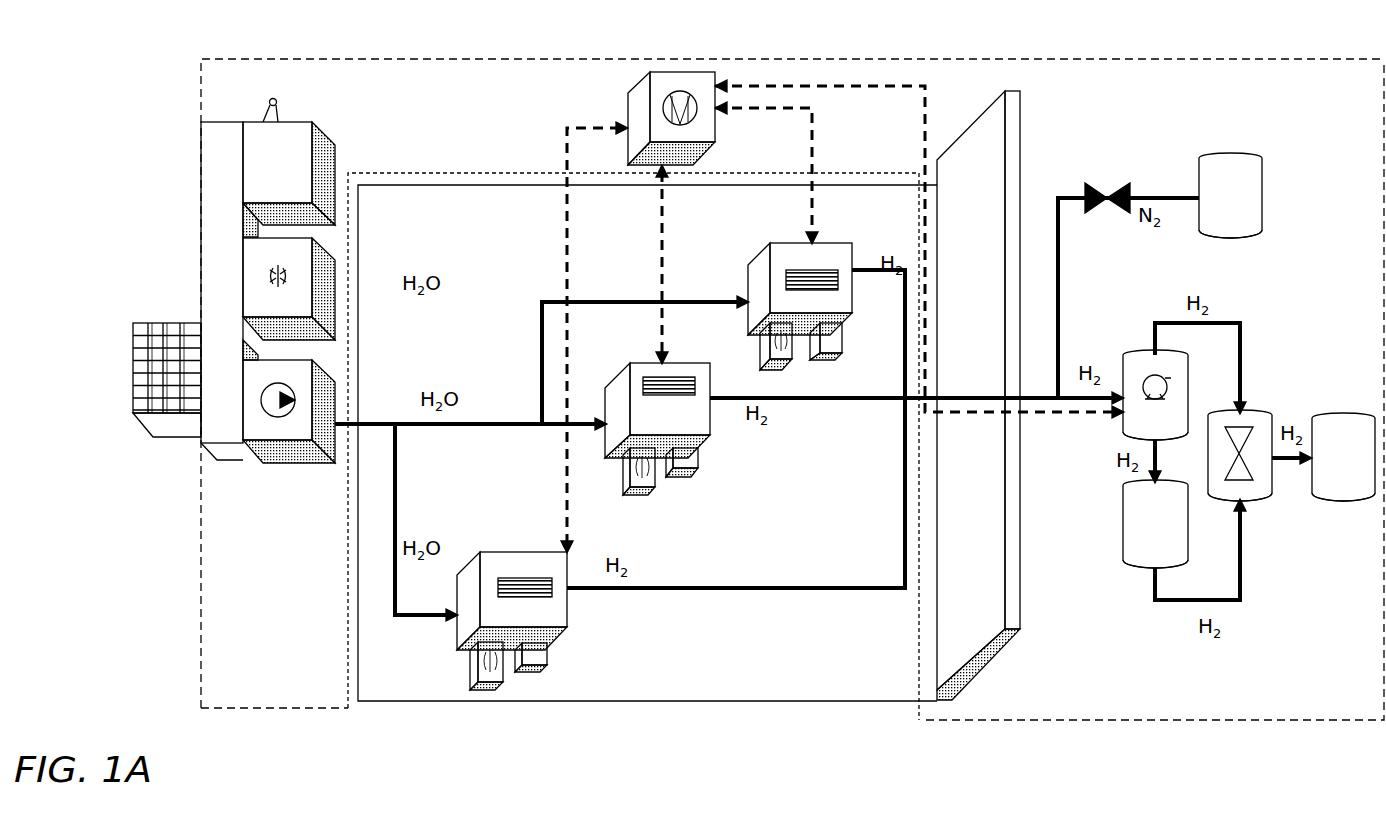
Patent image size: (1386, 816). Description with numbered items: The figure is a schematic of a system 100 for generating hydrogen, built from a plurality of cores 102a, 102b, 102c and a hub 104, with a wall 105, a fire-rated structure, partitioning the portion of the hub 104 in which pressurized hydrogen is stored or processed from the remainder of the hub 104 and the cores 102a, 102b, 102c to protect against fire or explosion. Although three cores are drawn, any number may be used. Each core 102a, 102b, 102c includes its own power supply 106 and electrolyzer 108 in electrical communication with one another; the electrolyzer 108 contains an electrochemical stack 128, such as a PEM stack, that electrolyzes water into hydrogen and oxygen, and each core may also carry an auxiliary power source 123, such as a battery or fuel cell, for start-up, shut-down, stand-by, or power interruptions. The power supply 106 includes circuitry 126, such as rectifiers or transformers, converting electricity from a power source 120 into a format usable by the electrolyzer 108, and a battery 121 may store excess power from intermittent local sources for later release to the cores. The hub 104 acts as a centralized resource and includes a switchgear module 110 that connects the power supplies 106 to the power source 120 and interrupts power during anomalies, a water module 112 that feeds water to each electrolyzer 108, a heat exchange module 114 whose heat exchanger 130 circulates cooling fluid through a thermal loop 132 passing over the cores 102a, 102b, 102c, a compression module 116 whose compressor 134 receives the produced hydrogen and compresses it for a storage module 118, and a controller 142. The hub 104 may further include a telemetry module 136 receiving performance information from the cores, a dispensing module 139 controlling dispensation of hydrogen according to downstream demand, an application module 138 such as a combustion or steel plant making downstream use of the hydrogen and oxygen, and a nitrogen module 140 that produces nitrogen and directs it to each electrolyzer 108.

The system 100 is at (156, 96).
The core 102a is at (571, 642).
The core 102b is at (718, 450).
The core 102c is at (860, 260).
The hub 104 is at (1140, 58).
The wall 105 is at (1022, 120).
The power supply 106 is at (762, 352).
The electrolyzer 108 is at (804, 240).
The switchgear module 110 is at (250, 267).
The water module 112 is at (289, 464).
The heat exchange module 114 is at (659, 62).
The compression module 116 is at (1127, 350).
The storage module 118 is at (1116, 552).
The power source 120 is at (155, 348).
The battery 121 is at (165, 425).
The auxiliary power source 123 is at (838, 357).
The circuitry 126 is at (785, 346).
The electrochemical stack 128 is at (790, 272).
The heat exchanger 130 is at (683, 92).
The thermal loop 132 is at (812, 140).
The compressor 134 is at (1152, 380).
The telemetry module 136 is at (252, 161).
The application module 138 is at (1335, 510).
The dispensing module 139 is at (1258, 410).
The nitrogen module 140 is at (1270, 185).
The controller 142 is at (240, 468).